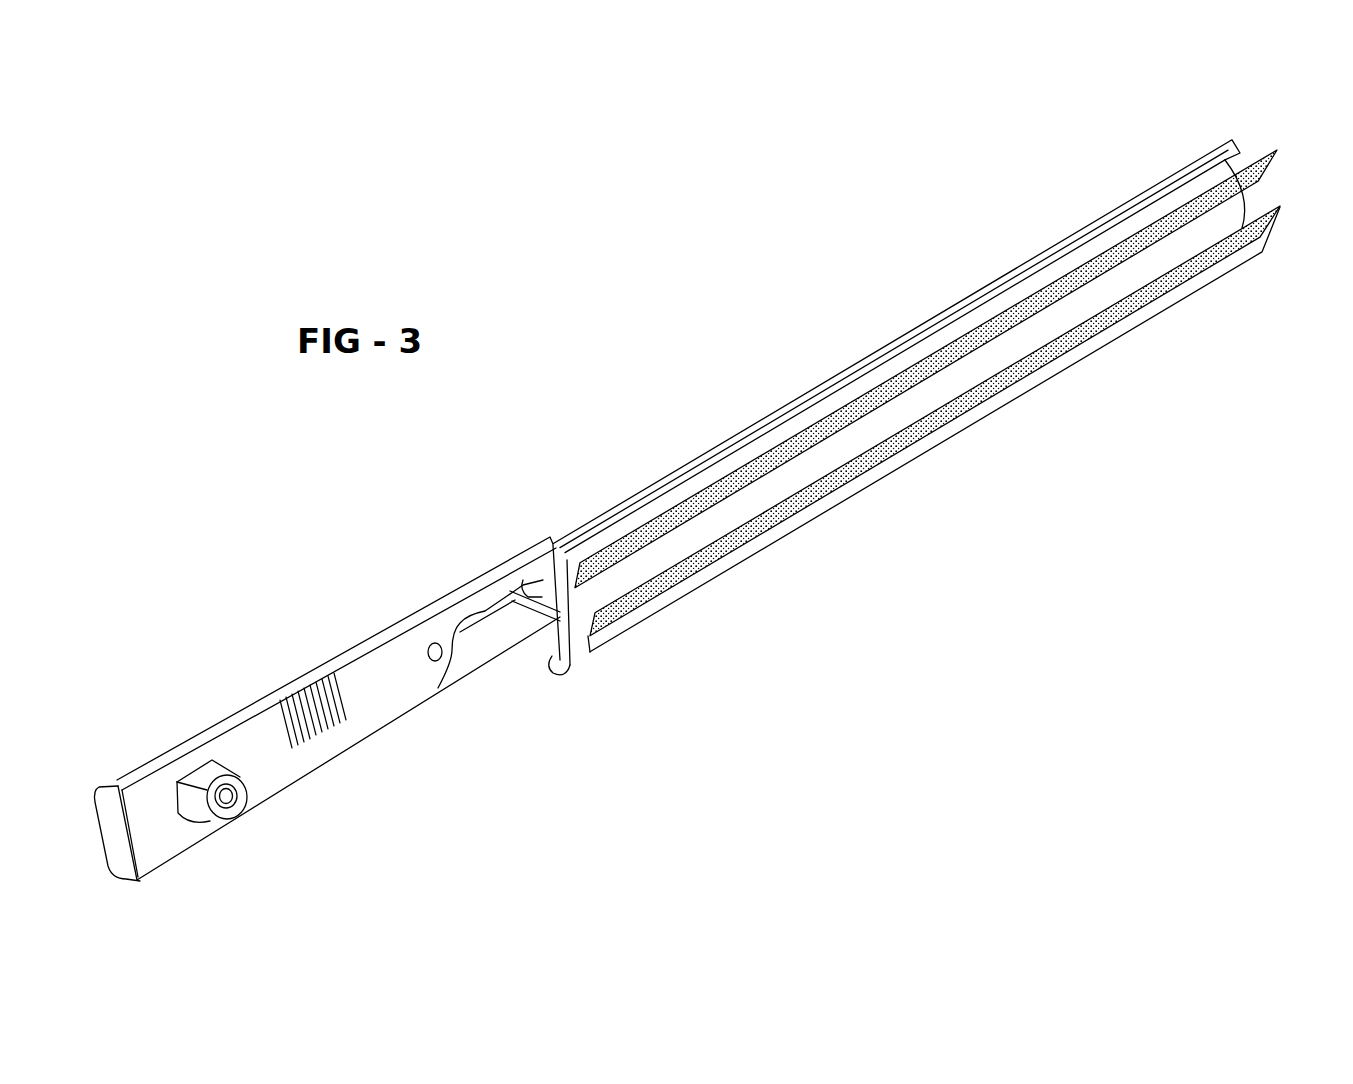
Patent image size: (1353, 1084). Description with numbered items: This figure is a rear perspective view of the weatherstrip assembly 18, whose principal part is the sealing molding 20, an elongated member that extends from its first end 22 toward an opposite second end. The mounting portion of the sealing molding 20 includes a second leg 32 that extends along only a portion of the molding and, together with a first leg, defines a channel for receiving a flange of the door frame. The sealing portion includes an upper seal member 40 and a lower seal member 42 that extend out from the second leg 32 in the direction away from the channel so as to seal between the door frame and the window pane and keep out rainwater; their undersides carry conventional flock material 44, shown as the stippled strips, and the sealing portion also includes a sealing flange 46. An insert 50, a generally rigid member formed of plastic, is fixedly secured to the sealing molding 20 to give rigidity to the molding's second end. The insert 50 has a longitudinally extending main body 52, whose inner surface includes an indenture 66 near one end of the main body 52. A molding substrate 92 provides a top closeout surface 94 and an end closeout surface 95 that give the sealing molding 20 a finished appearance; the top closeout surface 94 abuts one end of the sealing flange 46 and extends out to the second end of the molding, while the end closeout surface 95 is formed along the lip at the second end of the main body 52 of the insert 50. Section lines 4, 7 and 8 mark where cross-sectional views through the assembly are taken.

The weatherstrip assembly 18 is at (712, 600).
The sealing molding 20 is at (800, 535).
The first end 22 is at (1220, 167).
The second leg 32 is at (932, 446).
The upper seal member 40 is at (1273, 150).
The lower seal member 42 is at (1283, 216).
The flock material 44 is at (1122, 253).
The sealing flange 46 is at (790, 408).
The insert 50 is at (370, 748).
The main body 52 is at (403, 690).
The indenture 66 is at (478, 650).
The molding substrate 92 is at (348, 642).
The top closeout surface 94 is at (435, 592).
The end closeout surface 95 is at (106, 852).
The section line 4- 4 is at (868, 320).
The section line 7- 7 is at (578, 500).
The section line 8- 8 is at (203, 707).